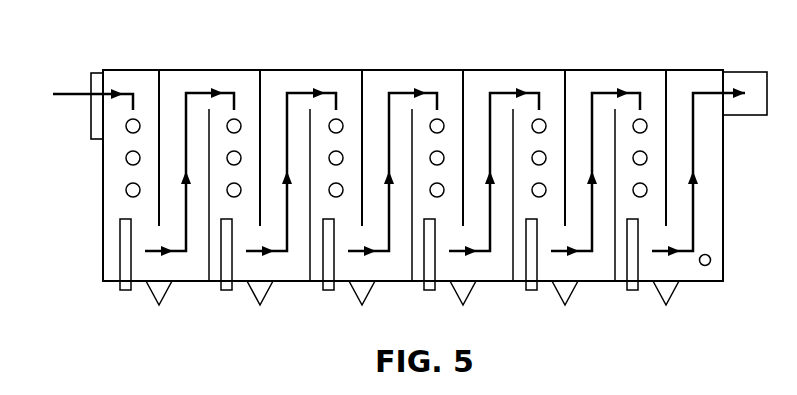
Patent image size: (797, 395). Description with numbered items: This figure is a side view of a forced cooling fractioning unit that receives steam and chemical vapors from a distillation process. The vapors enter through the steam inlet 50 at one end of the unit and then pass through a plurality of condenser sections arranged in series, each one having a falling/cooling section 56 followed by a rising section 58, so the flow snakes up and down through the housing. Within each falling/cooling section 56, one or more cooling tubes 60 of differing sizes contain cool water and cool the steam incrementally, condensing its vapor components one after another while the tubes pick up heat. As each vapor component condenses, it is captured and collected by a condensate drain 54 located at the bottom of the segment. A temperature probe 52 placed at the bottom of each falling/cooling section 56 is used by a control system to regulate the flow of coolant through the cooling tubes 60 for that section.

The steam inlet 50 is at (83, 92).
The temperature probe 52 is at (128, 292).
The condensate drain 54 is at (148, 288).
The falling/cooling section 56 is at (245, 82).
The rising section 58 is at (271, 93).
The cooling tubes 60 is at (337, 117).